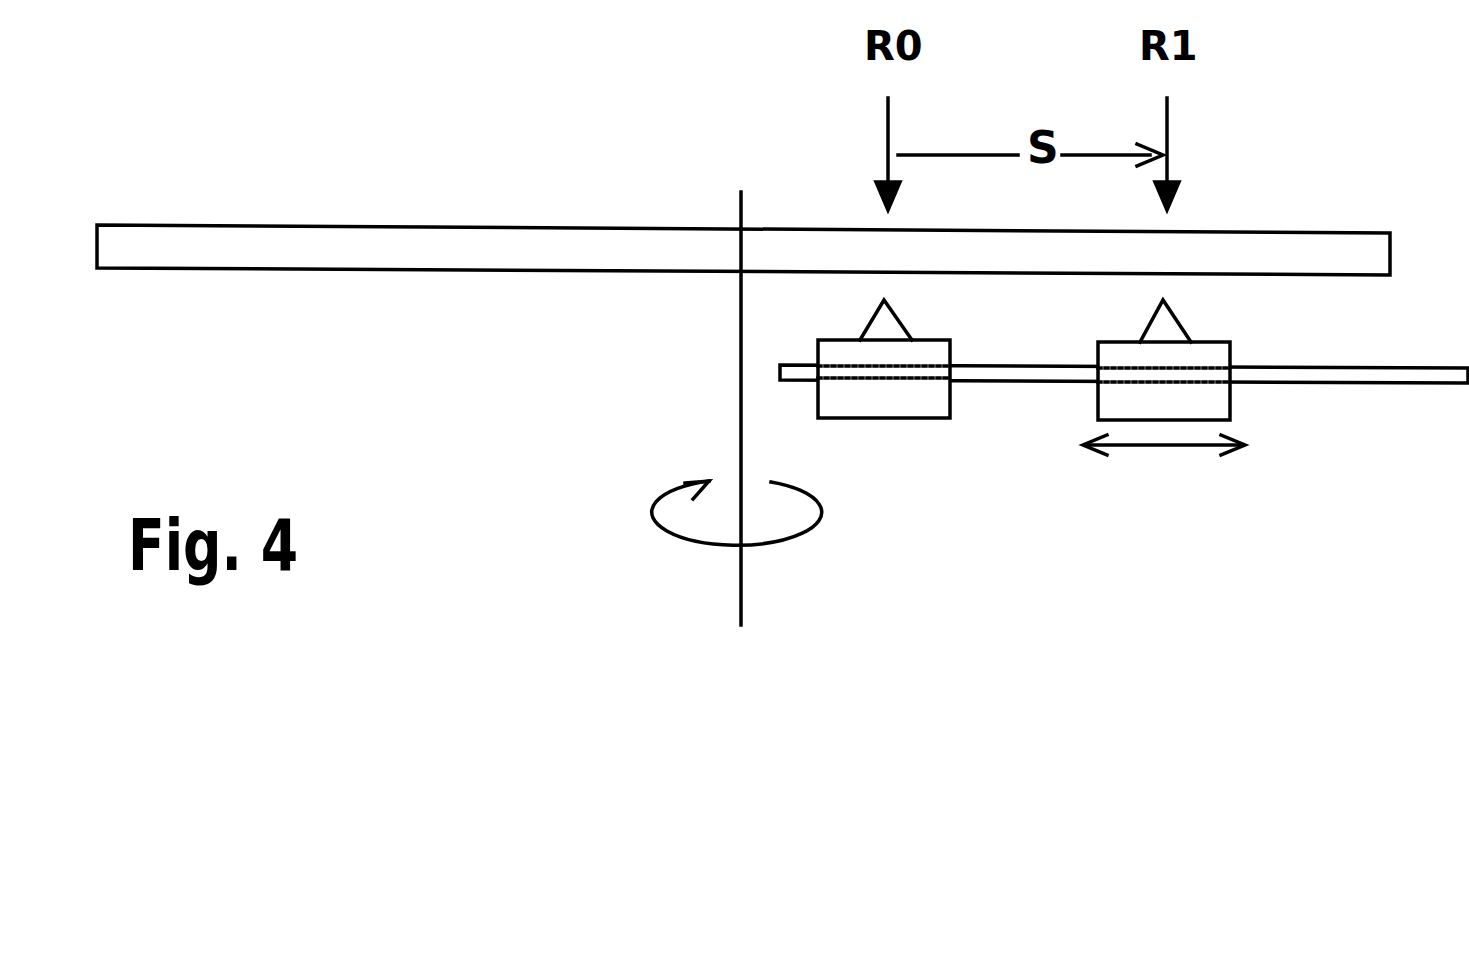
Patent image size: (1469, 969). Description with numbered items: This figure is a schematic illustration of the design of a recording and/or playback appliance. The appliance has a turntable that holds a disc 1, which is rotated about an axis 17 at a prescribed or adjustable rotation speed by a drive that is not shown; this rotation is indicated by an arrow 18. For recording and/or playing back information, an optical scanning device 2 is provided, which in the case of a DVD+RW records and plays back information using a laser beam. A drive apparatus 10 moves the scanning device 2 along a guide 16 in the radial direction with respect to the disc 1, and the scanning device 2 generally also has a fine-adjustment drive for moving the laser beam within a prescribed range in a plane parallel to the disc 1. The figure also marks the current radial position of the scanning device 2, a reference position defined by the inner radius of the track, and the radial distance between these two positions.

The disc 1 is at (320, 230).
The optical scanning device 2 is at (1232, 417).
The drive apparatus 10 is at (1164, 465).
The guide 16 is at (1387, 391).
The axis 17 is at (746, 576).
The arrow 18 is at (824, 506).